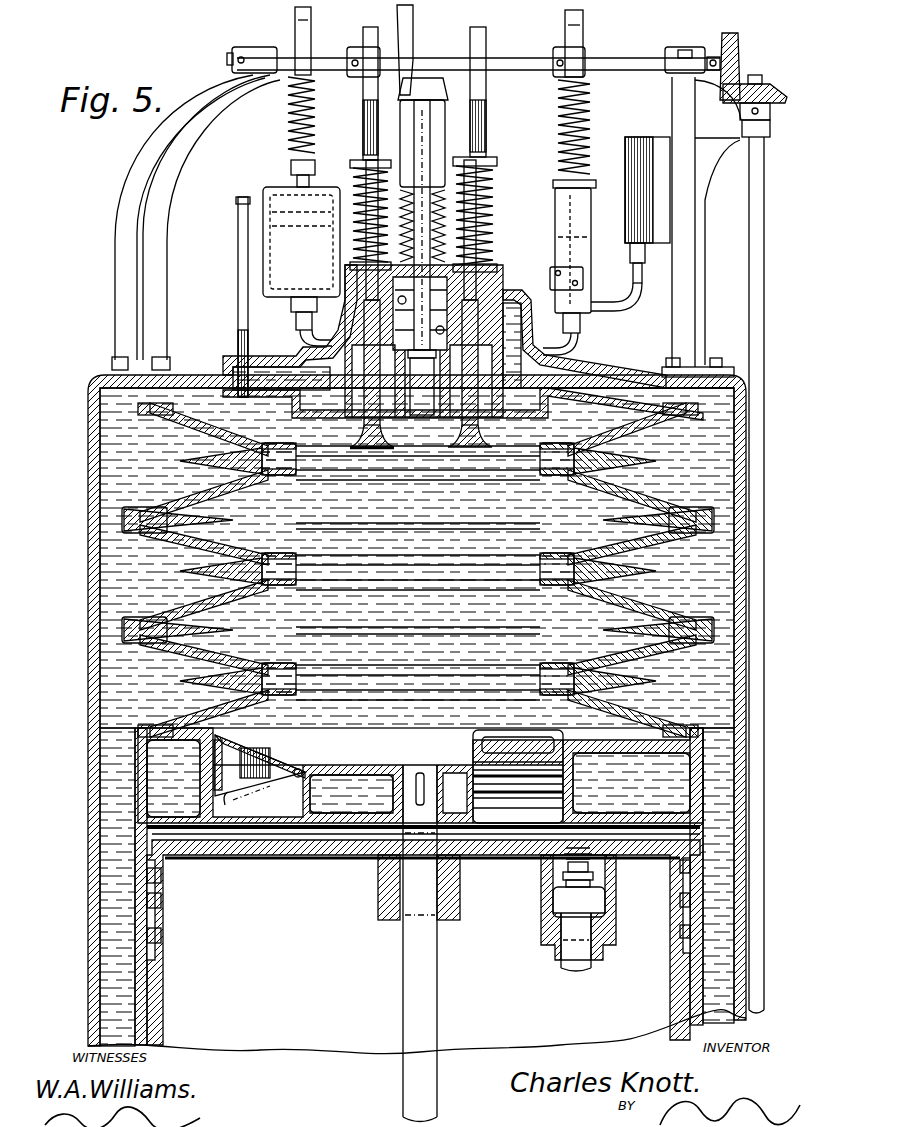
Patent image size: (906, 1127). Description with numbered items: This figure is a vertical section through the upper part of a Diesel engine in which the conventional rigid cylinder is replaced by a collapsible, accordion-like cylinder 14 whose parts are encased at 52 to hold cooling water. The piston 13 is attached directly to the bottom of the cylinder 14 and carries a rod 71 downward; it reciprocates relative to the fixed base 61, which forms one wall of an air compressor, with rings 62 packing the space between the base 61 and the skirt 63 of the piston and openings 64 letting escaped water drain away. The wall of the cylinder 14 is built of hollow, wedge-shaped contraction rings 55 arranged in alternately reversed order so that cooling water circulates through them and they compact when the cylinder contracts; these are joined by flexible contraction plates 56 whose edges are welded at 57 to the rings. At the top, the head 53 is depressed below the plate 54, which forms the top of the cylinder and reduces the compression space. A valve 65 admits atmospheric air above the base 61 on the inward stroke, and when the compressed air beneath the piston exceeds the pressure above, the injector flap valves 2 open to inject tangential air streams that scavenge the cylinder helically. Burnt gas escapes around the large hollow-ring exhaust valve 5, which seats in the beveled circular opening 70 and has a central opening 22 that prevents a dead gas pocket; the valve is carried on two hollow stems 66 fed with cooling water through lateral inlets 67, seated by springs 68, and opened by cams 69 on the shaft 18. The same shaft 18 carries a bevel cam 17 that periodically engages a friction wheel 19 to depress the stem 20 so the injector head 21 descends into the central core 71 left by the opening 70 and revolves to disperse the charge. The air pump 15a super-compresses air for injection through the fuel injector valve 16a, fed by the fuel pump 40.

The bevel cam 17 is at (413, 42).
The shaft 18 is at (498, 62).
The cams 69 is at (363, 100).
The friction wheel 19 is at (414, 97).
The stem 20 is at (418, 122).
The injector head 21 is at (420, 430).
The central opening 22 is at (432, 437).
The stems 66 is at (355, 185).
The springs 68 is at (496, 176).
The fuel injector valve 16a is at (486, 265).
The fuel pump 40 is at (580, 275).
The air pump 15a is at (264, 254).
The lateral inlets 67 is at (300, 340).
The head 53 is at (560, 377).
The plate 54 is at (622, 380).
The casing 52 is at (90, 462).
The welded joints 57 is at (276, 448).
The central core 71 is at (355, 432).
The exhaust valve 5 is at (367, 447).
The beveled circular opening 70 is at (495, 428).
The contraction rings 55 is at (248, 475).
The flexible contraction plates 56 is at (270, 555).
The cylinder 14 is at (418, 573).
The injector flap valves 2 is at (273, 757).
The piston 13 is at (357, 767).
The fixed base 61 is at (307, 855).
The rings 62 is at (145, 873).
The openings 64 is at (147, 895).
The skirt 63 is at (147, 965).
The valve 65 is at (553, 890).